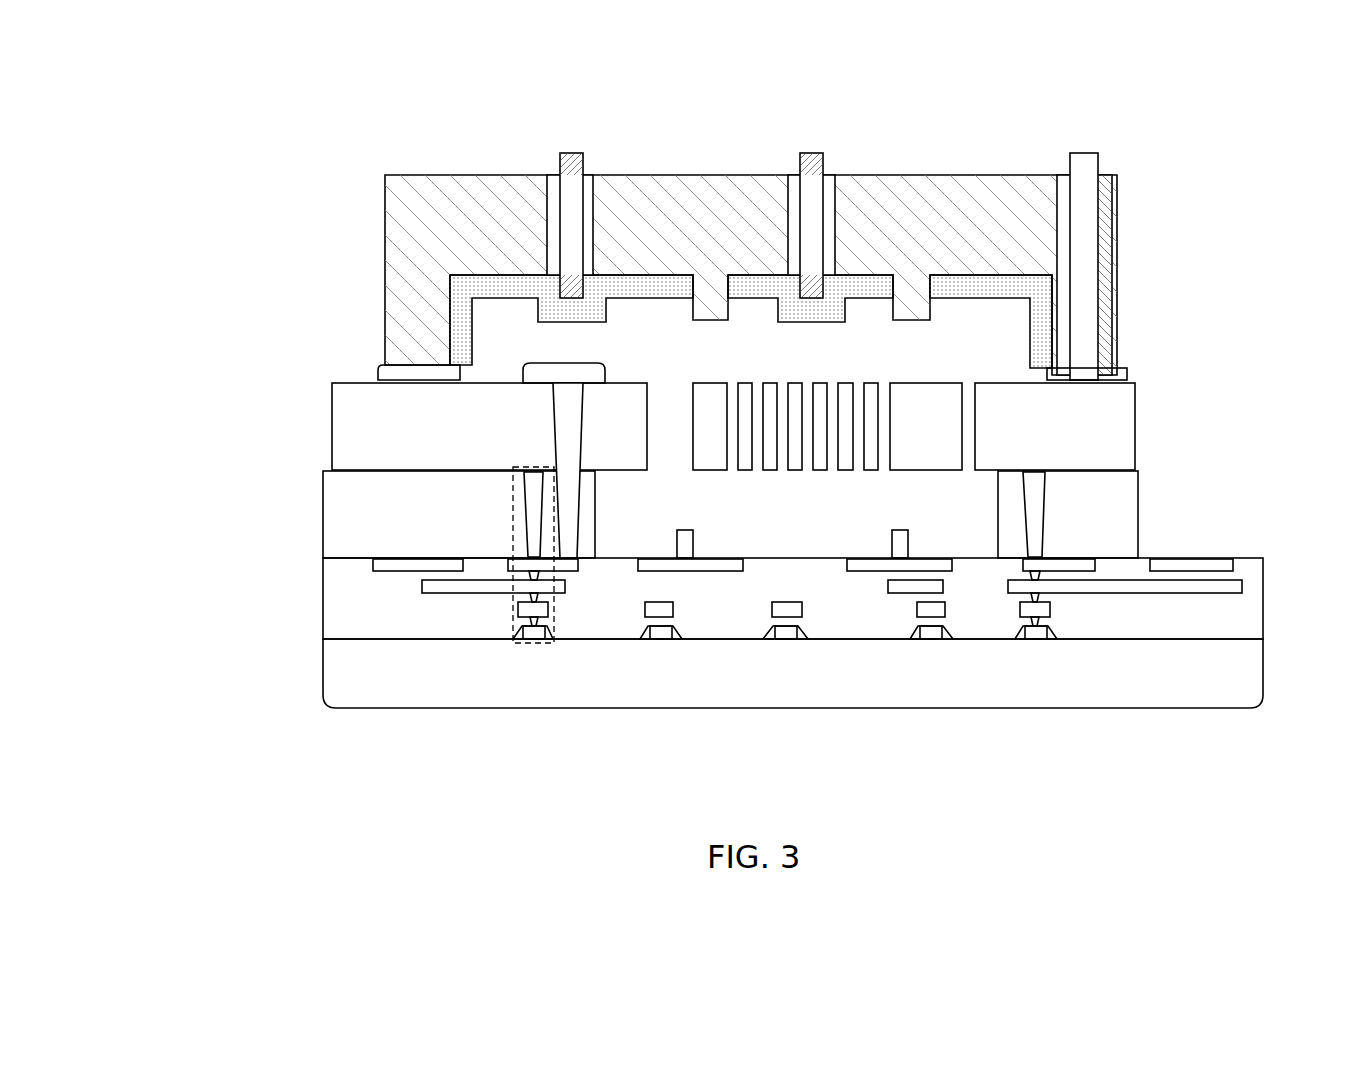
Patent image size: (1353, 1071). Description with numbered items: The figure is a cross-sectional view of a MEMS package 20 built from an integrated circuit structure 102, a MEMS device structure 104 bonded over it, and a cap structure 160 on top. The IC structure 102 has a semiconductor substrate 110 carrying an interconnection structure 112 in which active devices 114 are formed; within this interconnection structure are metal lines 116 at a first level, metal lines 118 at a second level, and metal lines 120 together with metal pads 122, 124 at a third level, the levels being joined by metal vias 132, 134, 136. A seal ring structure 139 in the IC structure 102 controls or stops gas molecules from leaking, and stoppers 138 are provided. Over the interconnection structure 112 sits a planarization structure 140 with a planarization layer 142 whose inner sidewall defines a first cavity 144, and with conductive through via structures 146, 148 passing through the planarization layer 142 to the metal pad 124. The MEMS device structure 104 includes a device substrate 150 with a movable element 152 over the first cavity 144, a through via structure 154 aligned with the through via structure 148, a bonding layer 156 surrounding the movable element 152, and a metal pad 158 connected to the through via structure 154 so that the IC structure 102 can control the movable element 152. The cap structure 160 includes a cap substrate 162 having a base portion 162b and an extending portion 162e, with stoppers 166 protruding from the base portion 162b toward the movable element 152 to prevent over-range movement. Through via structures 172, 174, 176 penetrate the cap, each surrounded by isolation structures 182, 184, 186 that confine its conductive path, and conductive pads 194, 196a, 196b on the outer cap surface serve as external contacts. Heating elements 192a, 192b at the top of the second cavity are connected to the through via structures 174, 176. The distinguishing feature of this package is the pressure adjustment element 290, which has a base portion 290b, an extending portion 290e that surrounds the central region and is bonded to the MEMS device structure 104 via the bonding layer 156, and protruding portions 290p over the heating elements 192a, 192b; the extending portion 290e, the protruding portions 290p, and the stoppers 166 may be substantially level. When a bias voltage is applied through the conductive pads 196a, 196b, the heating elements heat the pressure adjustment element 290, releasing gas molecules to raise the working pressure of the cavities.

The MEMS package 20 is at (733, 402).
The integrated circuit structure 102 is at (733, 568).
The MEMS device structure 104 is at (664, 394).
The semiconductor substrate 110 is at (834, 673).
The interconnection structure 112 is at (778, 610).
The active devices 114 is at (929, 681).
The metal lines 116 is at (932, 604).
The metal lines 118 is at (884, 576).
The metal lines 120 is at (682, 538).
The metal pad 122 is at (1248, 549).
The metal pad 124 is at (600, 539).
The metal vias 132 is at (1039, 683).
The metal vias 134 is at (493, 656).
The metal vias 136 is at (1000, 656).
The stoppers 138 is at (934, 518).
The seal ring structure 139 is at (533, 609).
The planarization structure 140 is at (709, 470).
The planarization layer 142 is at (1103, 514).
The first cavity 144 is at (830, 617).
The conductive through via structure 146 is at (739, 514).
The conductive through via structure 148 is at (613, 470).
The device substrate 150 is at (1092, 426).
The movable element 152 is at (805, 394).
The conductive through via structure 154 is at (453, 426).
The bonding layer 156 is at (1128, 374).
The metal pad 158 is at (432, 386).
The cap structure 160 is at (664, 228).
The cap substrate 162 is at (657, 236).
The base portion 162b is at (657, 247).
The extending portion 162e is at (657, 325).
The stoppers 166 is at (798, 230).
The through via structure 172 is at (1133, 275).
The through via structure 174 is at (799, 183).
The through via structure 176 is at (558, 183).
The isolation structure 182 is at (1153, 273).
The isolation structure 184 is at (789, 194).
The isolation structure 186 is at (548, 194).
The heating element 192a is at (774, 219).
The heating element 192b is at (532, 219).
The conductive pad 194 is at (1083, 238).
The conductive pad 196a is at (837, 121).
The conductive pad 196b is at (597, 121).
The pressure adjustment element 290 is at (678, 249).
The base portion 290b is at (678, 289).
The extending portion 290e is at (678, 325).
The protruding portion 290p is at (673, 338).